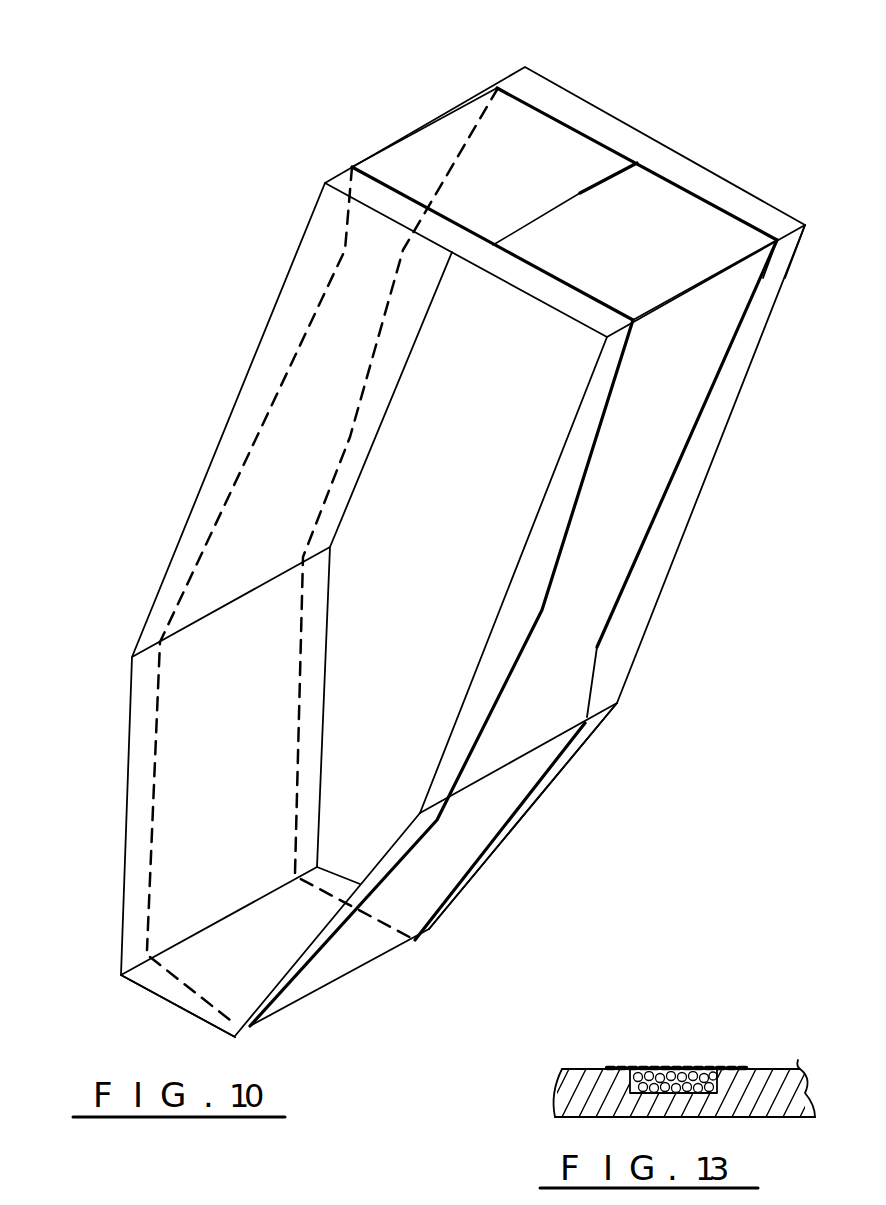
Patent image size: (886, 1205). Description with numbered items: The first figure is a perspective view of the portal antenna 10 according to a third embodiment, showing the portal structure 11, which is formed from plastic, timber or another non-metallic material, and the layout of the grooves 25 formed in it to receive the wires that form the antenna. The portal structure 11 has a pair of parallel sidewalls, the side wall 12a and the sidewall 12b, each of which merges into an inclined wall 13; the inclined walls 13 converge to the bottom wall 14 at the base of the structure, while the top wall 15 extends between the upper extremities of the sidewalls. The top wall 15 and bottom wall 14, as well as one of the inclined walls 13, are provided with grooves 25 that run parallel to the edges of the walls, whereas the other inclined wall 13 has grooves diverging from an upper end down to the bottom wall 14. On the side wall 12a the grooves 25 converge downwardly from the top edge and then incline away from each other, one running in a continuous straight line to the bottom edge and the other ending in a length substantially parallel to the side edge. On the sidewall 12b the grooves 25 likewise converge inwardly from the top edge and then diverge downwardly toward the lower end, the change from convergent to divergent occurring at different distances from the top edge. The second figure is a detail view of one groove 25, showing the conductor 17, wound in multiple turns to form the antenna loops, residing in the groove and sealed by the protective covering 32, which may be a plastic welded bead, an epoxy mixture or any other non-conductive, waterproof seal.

In FIG. 10, the portal antenna 10 is at (234, 308).
In FIG. 10, the portal structure 11 is at (803, 253).
In FIG. 10, the side wall 12a is at (611, 662).
In FIG. 10, the sidewall 12b is at (235, 405).
In FIG. 10, the inclined wall 13 is at (130, 776).
In FIG. 10, the bottom wall 14 is at (175, 1000).
In FIG. 10, the top wall 15 is at (540, 92).
In FIG. 10, the grooves 25 is at (582, 192).
In FIG. 13, the grooves 25 is at (632, 1087).
In FIG. 13, the conductor 17 is at (640, 1044).
In FIG. 13, the protective covering 32 is at (720, 1068).